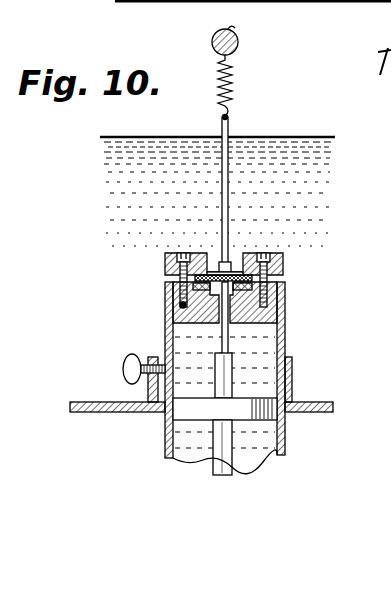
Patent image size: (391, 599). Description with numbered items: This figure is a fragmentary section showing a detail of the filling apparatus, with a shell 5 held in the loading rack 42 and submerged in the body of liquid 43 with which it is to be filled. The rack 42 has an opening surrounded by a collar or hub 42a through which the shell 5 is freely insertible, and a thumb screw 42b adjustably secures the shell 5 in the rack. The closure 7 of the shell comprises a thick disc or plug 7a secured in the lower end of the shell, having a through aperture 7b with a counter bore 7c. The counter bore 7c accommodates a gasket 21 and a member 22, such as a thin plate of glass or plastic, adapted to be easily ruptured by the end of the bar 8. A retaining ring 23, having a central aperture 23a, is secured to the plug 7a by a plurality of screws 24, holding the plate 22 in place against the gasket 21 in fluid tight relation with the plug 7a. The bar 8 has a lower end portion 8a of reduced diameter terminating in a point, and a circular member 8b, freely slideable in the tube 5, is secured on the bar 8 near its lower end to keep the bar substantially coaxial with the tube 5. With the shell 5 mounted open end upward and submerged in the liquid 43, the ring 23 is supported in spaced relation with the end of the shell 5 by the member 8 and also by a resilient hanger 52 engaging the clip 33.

The resilient hanger 52 is at (232, 85).
The body of liquid 43 is at (290, 141).
The clip 33 is at (229, 188).
The rupturable member 22 is at (220, 266).
The retaining ring 23 is at (284, 264).
The central aperture 23a is at (239, 262).
The screws 24 is at (268, 255).
The closure 7 is at (283, 293).
The plug 7a is at (275, 312).
The through aperture 7b is at (213, 324).
The counter bore 7c is at (195, 278).
The gasket 21 is at (183, 299).
The bar 8 is at (232, 467).
The lower end portion of the bar 8a is at (244, 332).
The circular member 8b is at (178, 418).
The shell 5 is at (285, 445).
The loading rack 42 is at (330, 414).
The collar or hub 42a is at (293, 373).
The thumb screw 42b is at (122, 368).